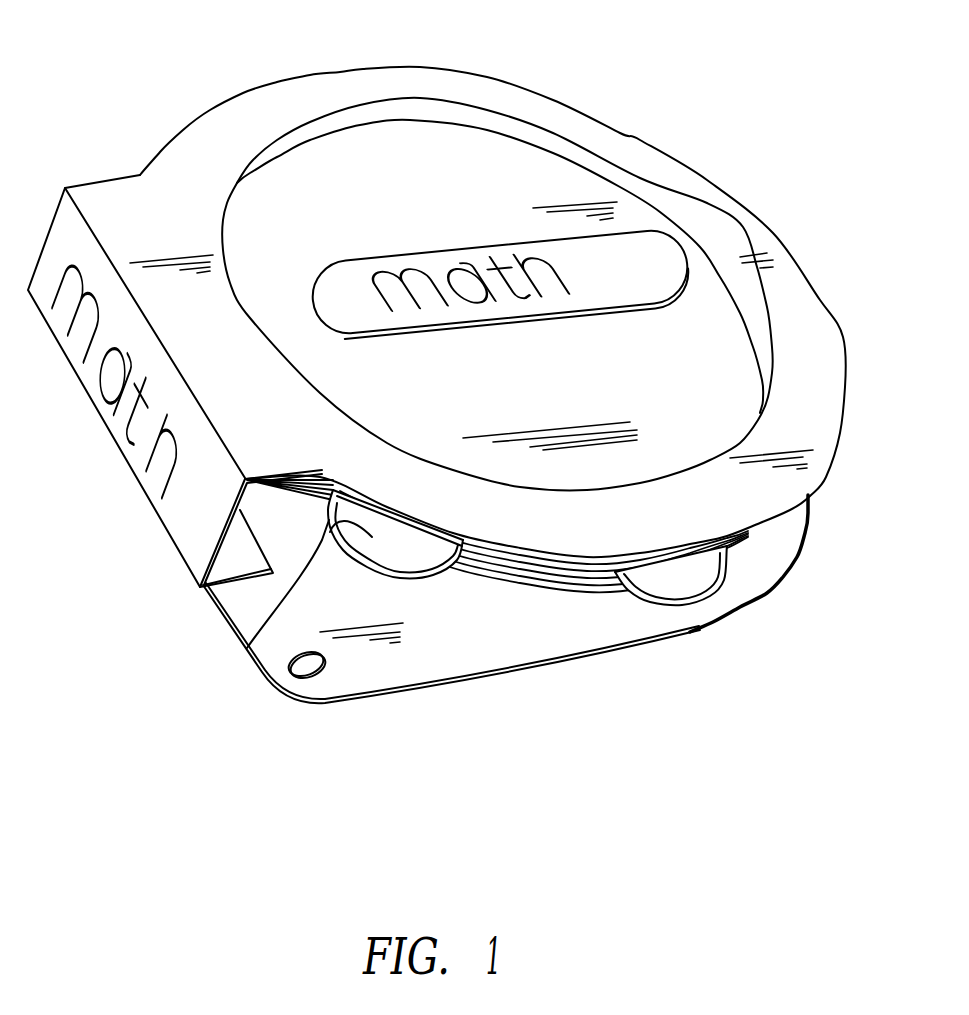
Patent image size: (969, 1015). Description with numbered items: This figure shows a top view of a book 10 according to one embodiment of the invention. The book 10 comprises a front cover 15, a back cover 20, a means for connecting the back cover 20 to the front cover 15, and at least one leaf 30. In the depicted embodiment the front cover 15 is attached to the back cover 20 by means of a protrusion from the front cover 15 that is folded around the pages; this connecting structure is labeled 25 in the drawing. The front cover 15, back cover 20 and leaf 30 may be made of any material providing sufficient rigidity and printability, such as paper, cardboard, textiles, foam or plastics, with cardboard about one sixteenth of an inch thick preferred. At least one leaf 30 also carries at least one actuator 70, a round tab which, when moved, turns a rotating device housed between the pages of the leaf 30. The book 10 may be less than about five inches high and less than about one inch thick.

The book 10 is at (527, 63).
The front cover 15 is at (640, 153).
The back cover 20 is at (597, 632).
The clip 25 is at (200, 590).
The leaf 30 is at (520, 583).
The actuator 70 is at (247, 648).